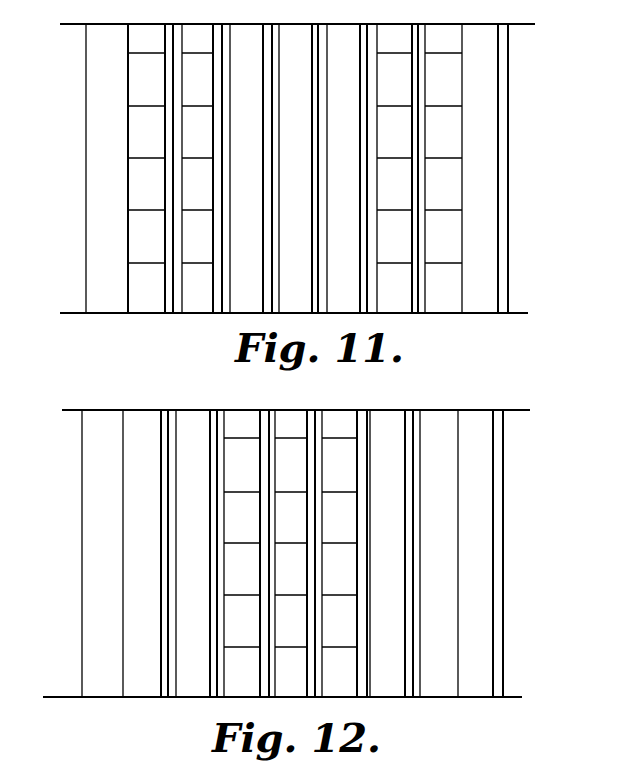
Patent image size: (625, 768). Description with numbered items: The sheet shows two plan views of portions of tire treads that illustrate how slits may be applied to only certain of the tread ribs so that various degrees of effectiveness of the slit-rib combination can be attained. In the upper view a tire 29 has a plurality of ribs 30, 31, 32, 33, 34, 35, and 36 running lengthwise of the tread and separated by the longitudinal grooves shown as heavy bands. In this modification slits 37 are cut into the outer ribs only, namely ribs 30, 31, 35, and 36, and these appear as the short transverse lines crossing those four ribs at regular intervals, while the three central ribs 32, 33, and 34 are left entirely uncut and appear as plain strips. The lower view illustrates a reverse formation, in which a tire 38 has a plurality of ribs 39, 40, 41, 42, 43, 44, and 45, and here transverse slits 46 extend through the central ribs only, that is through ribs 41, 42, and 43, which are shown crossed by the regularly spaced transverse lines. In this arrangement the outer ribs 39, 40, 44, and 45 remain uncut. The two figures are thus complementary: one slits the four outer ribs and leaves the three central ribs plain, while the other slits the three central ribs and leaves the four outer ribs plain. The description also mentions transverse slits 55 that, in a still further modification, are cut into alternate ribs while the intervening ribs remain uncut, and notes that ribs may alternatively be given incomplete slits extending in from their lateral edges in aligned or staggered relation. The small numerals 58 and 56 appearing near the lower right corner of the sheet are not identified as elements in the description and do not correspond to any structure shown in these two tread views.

In FIG. 11, the tire 29 is at (96, 158).
In FIG. 11, the rib 30 is at (143, 303).
In FIG. 11, the rib 31 is at (190, 303).
In FIG. 11, the rib 32 is at (250, 303).
In FIG. 11, the rib 33 is at (300, 168).
In FIG. 11, the rib 34 is at (347, 168).
In FIG. 11, the rib 35 is at (392, 303).
In FIG. 11, the rib 36 is at (450, 303).
In FIG. 11, the slits 37 is at (442, 158).
In FIG. 12, the tire 38 is at (90, 556).
In FIG. 12, the rib 39 is at (133, 690).
In FIG. 12, the rib 40 is at (200, 690).
In FIG. 12, the rib 41 is at (246, 553).
In FIG. 12, the rib 42 is at (294, 553).
In FIG. 12, the rib 43 is at (344, 553).
In FIG. 12, the rib 44 is at (390, 690).
In FIG. 12, the rib 45 is at (440, 690).
In FIG. 12, the transverse slits 46 is at (333, 545).
In FIG. 12, the stray numeral 58 is at (541, 753).
In FIG. 12, the transverse slits 55 is at (577, 743).
In FIG. 12, the stray numeral 56 is at (612, 757).